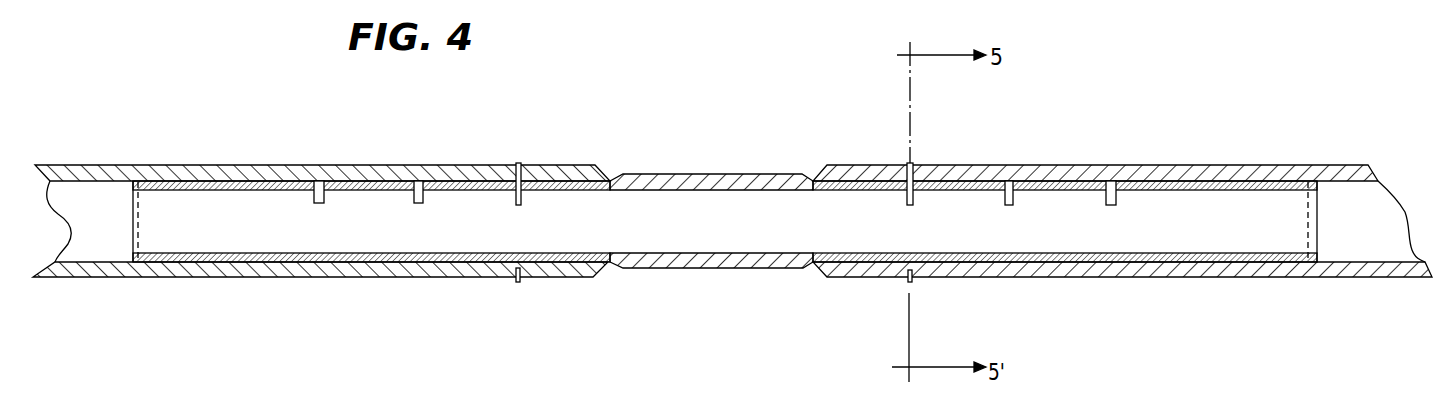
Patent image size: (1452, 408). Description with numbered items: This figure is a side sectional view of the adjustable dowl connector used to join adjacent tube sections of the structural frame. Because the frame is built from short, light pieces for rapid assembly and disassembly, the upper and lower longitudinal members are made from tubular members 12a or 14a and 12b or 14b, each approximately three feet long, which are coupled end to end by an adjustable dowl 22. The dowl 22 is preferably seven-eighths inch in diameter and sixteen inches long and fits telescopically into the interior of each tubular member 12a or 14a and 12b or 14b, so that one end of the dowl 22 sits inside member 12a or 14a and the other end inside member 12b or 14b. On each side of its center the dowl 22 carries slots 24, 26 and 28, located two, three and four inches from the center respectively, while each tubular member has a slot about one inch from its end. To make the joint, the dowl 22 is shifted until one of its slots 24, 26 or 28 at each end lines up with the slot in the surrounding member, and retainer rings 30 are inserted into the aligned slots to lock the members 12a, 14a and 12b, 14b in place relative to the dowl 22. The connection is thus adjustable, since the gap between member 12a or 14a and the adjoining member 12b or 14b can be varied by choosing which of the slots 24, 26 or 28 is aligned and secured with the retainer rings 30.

The tubular member 12a is at (311, 201).
The tubular member 14a is at (96, 165).
The tubular member 12b is at (1131, 203).
The tubular member 14b is at (1339, 165).
The adjustable dowl 22 is at (657, 303).
The slot 24 is at (514, 196).
The slot 26 is at (412, 203).
The slot 28 is at (313, 202).
The retainer ring 30 is at (525, 158).